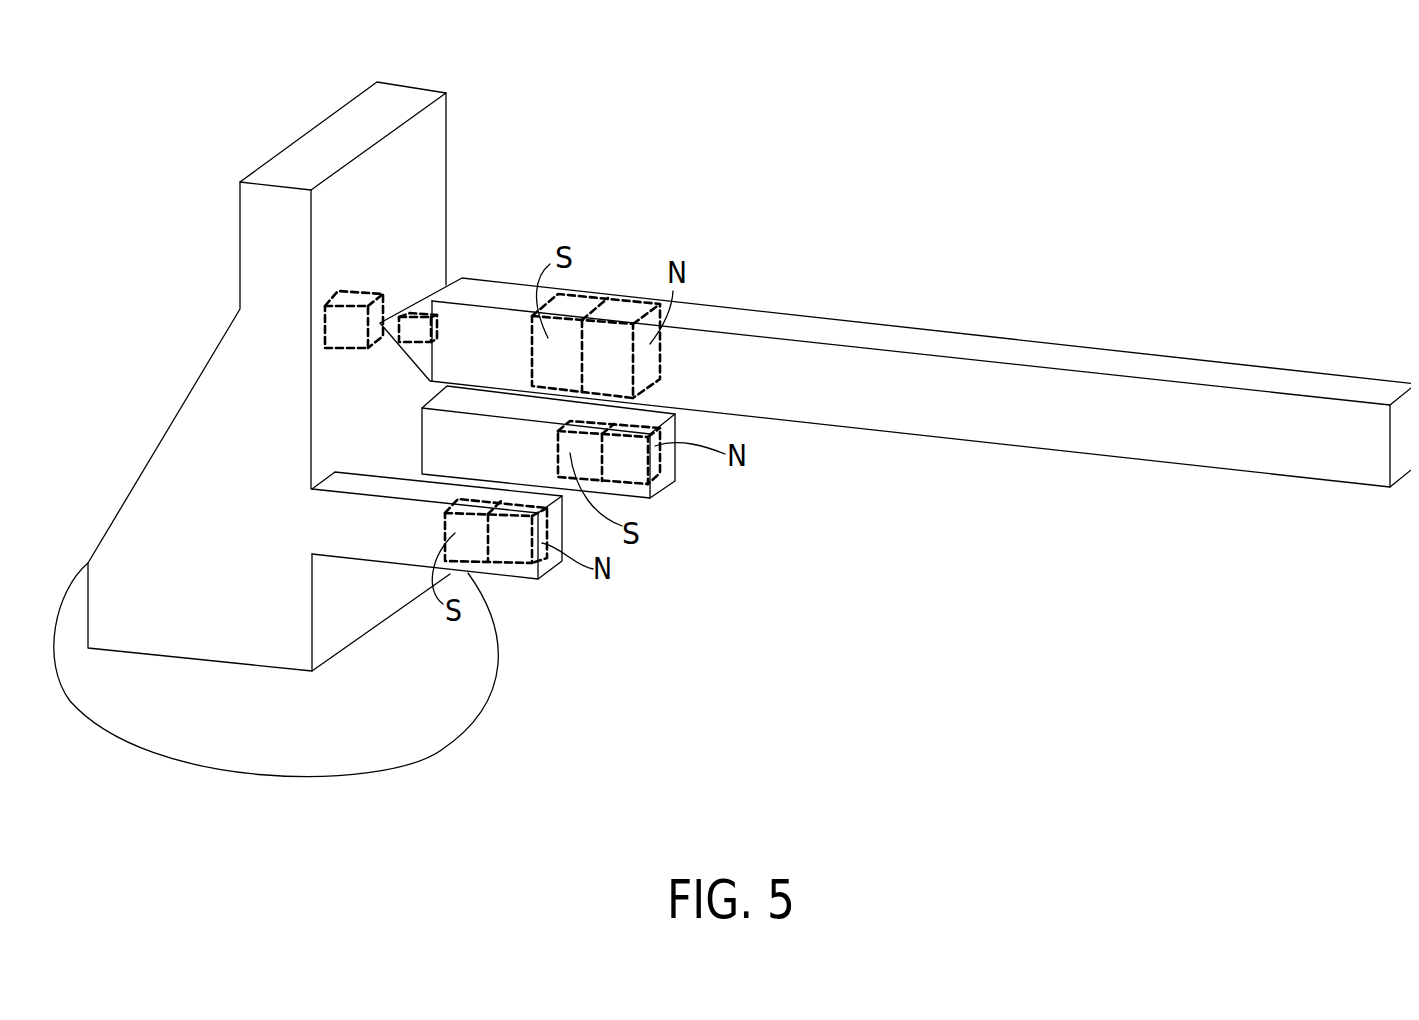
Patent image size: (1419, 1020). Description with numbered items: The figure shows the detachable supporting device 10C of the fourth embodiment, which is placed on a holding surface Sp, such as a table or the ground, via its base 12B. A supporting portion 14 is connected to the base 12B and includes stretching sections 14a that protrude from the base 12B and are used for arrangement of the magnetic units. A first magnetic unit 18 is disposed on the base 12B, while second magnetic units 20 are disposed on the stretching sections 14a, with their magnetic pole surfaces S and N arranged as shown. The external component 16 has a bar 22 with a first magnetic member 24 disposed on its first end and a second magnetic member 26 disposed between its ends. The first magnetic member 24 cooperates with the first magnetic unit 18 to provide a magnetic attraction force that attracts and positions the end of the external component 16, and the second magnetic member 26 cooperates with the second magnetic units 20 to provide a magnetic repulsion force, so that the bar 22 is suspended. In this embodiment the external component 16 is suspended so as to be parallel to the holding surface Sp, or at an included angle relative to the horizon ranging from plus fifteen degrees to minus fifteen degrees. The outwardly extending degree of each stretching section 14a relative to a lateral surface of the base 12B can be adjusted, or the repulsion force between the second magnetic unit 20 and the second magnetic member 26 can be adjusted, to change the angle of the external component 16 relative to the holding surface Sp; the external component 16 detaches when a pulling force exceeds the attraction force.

The detachable supporting device 10C is at (1114, 131).
The base 12B is at (177, 628).
The supporting portion 14 is at (510, 577).
The stretching section 14a is at (708, 692).
The external component 16 is at (895, 350).
The first magnetic unit 18 is at (348, 318).
The second magnetic unit 20 is at (623, 462).
The bar 22 is at (1330, 450).
The first magnetic member 24 is at (418, 322).
The second magnetic member 26 is at (612, 337).
The holding surface Sp is at (318, 751).